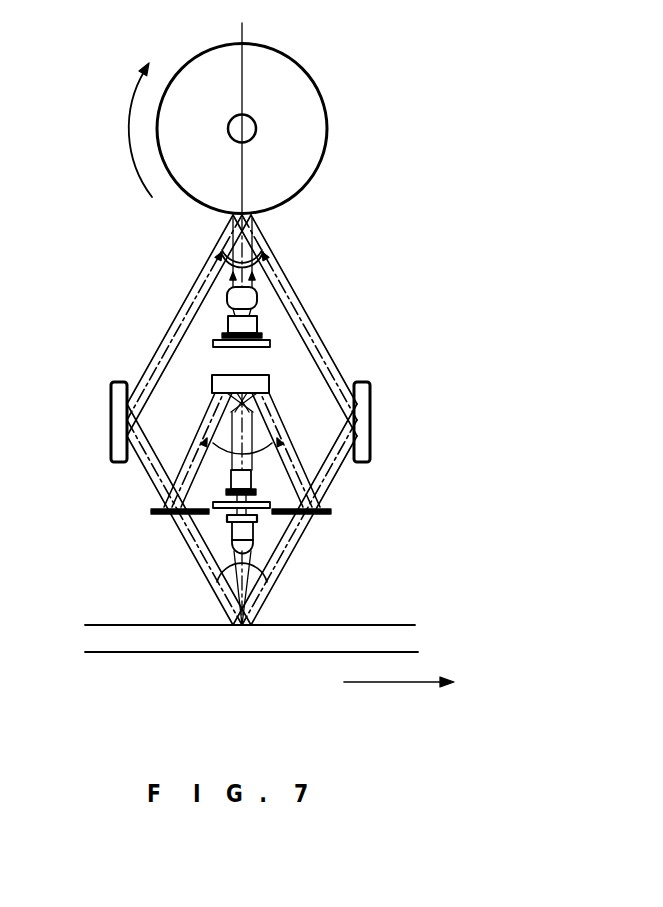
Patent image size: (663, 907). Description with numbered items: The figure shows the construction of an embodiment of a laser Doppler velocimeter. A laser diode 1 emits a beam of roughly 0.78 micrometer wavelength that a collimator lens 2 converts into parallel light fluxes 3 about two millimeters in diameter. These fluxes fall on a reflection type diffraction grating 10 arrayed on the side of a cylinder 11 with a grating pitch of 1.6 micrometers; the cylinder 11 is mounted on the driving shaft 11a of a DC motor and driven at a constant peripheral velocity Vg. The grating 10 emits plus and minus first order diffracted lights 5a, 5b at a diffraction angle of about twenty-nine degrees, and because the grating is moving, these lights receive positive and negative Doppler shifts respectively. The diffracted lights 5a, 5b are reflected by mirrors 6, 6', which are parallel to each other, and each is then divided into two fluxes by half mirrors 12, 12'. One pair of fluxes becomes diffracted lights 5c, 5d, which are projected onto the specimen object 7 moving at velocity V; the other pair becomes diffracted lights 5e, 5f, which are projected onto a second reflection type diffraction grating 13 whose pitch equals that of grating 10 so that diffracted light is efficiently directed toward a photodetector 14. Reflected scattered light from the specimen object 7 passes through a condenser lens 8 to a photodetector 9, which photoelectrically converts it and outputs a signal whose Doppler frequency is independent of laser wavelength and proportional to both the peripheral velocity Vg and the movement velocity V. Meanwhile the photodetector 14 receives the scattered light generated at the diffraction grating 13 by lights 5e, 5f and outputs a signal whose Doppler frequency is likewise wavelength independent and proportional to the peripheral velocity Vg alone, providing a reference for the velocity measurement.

The laser diode 1 is at (250, 322).
The collimator lens 2 is at (250, 294).
The parallel light fluxes 3 is at (230, 256).
The first order diffracted light 5a is at (185, 316).
The first order diffracted light 5b is at (315, 341).
The diffracted light 5c is at (199, 569).
The diffracted light 5d is at (294, 527).
The diffracted light 5e is at (196, 467).
The diffracted light 5f is at (288, 468).
The mirror 6 is at (87, 422).
The mirror 6' is at (390, 422).
The specimen object 7 is at (352, 636).
The condenser lens 8 is at (230, 548).
The photodetector 9 is at (231, 532).
The diffraction grating 10 is at (327, 157).
The cylinder 11 is at (290, 80).
The driving shaft 11a is at (256, 122).
The half mirror 12 is at (147, 523).
The half mirror 12' is at (338, 496).
The reflection type diffraction grating 13 is at (269, 382).
The photodetector 14 is at (231, 478).
The peripheral velocity Vg is at (118, 130).
The movement velocity V is at (413, 682).